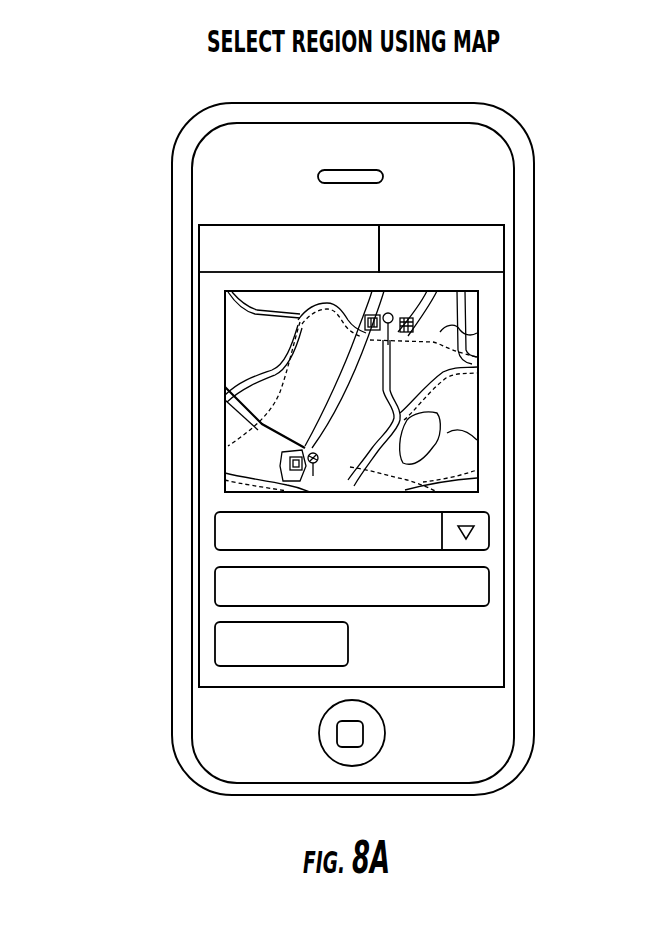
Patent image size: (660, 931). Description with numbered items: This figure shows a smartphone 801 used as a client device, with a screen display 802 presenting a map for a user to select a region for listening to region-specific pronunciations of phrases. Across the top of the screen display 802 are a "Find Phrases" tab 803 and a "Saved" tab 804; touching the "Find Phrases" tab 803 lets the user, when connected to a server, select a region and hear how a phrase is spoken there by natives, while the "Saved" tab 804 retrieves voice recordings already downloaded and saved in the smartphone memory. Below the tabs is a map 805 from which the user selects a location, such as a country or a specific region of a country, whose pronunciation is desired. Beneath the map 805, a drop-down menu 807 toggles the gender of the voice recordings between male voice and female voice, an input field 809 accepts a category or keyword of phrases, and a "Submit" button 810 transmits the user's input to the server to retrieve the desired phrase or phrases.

The mobile device 801 is at (158, 112).
The screen display 802 is at (230, 505).
The "Find Phrases" tab 803 is at (213, 248).
The "Saved" tab 804 is at (480, 240).
The map 805 is at (240, 367).
The drop-down menu 807 is at (487, 527).
The input field 809 is at (463, 582).
The "Submit" button 810 is at (213, 650).